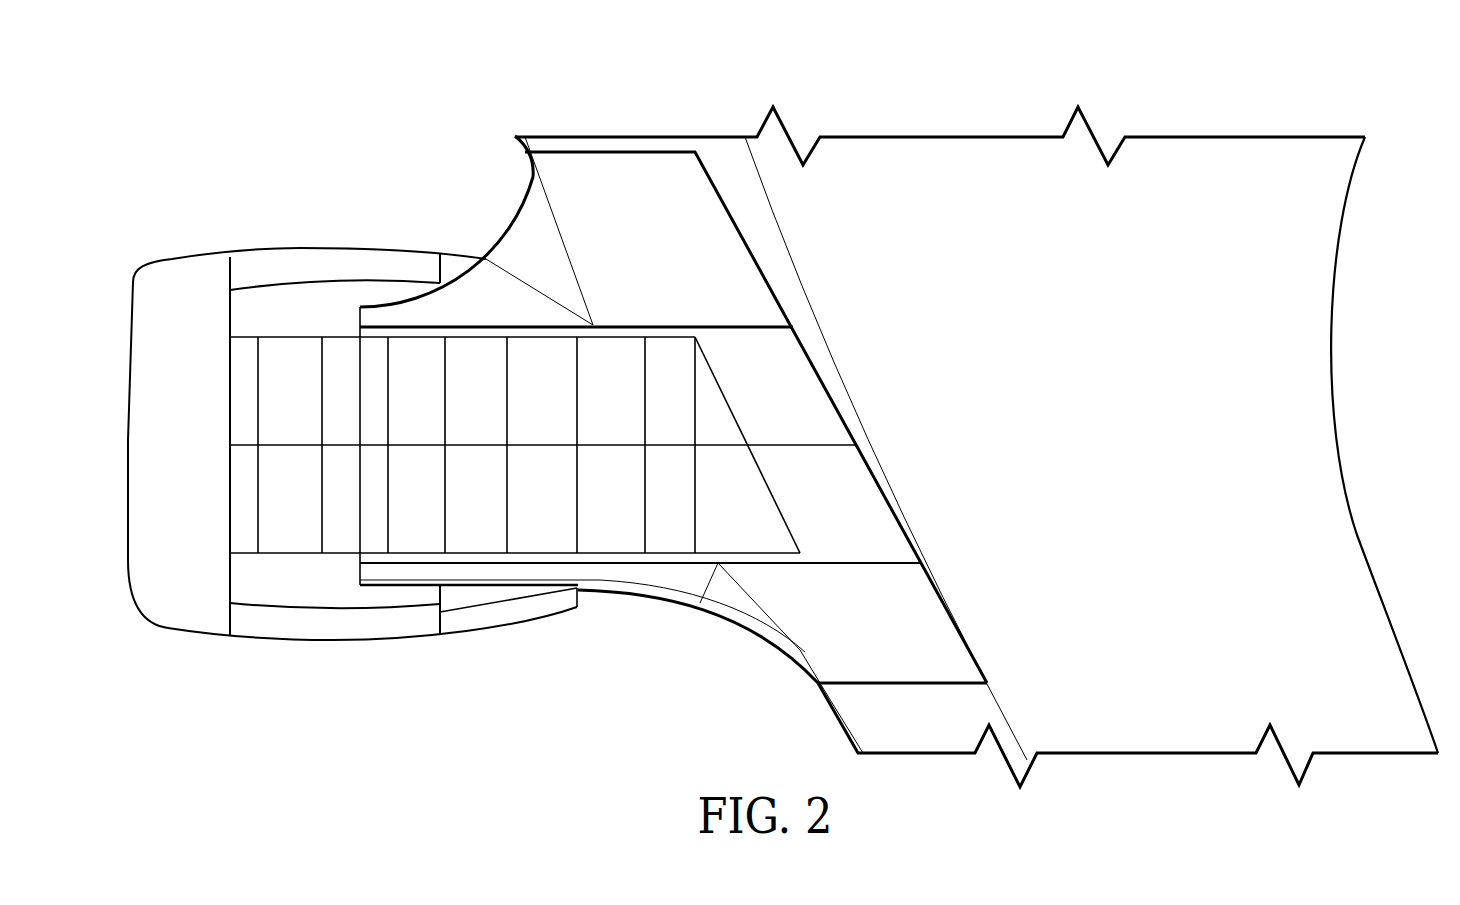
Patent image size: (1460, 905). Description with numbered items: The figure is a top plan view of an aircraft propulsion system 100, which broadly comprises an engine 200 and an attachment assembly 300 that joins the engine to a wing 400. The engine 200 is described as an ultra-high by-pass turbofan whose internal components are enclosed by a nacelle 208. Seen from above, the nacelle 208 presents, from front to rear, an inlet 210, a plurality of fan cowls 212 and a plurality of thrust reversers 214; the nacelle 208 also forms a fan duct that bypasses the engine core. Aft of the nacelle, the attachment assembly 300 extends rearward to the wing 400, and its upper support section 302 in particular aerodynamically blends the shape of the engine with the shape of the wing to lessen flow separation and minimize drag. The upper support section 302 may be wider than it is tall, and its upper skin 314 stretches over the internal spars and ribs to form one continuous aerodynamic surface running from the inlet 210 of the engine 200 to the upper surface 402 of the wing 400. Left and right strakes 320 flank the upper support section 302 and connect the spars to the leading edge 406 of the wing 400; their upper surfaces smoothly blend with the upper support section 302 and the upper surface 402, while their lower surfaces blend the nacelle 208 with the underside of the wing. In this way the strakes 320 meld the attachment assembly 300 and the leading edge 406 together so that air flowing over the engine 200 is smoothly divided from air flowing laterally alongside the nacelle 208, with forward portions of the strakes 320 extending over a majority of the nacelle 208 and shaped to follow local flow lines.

The aircraft propulsion system 100 is at (308, 118).
The engine 200 is at (248, 186).
The nacelle 208 is at (176, 645).
The inlet 210 is at (140, 347).
The fan cowls 212 is at (333, 257).
The thrust reversers 214 is at (455, 262).
The attachment assembly 300 is at (634, 616).
The upper support section 302 is at (521, 582).
The upper skin 314 is at (455, 540).
The left and right strakes 320 is at (517, 215).
The wing 400 is at (1004, 100).
The upper surface of the wing 402 is at (1354, 546).
The leading edge of the wing 406 is at (838, 727).